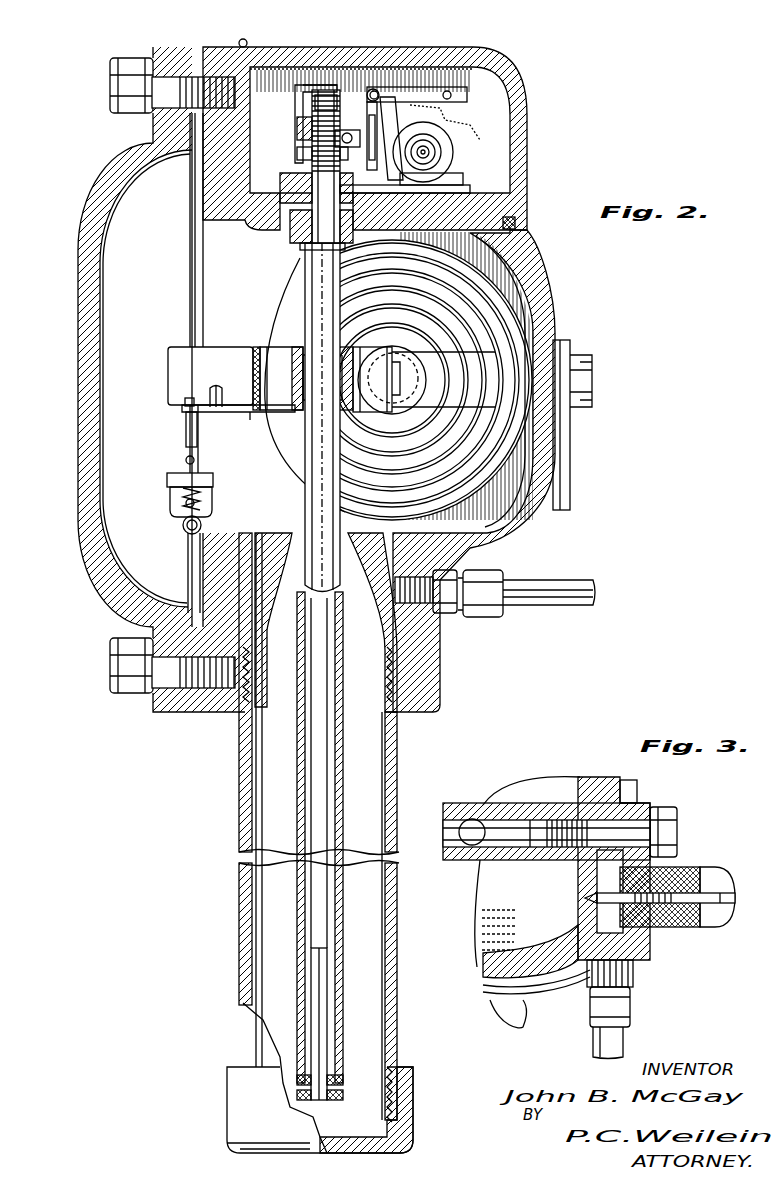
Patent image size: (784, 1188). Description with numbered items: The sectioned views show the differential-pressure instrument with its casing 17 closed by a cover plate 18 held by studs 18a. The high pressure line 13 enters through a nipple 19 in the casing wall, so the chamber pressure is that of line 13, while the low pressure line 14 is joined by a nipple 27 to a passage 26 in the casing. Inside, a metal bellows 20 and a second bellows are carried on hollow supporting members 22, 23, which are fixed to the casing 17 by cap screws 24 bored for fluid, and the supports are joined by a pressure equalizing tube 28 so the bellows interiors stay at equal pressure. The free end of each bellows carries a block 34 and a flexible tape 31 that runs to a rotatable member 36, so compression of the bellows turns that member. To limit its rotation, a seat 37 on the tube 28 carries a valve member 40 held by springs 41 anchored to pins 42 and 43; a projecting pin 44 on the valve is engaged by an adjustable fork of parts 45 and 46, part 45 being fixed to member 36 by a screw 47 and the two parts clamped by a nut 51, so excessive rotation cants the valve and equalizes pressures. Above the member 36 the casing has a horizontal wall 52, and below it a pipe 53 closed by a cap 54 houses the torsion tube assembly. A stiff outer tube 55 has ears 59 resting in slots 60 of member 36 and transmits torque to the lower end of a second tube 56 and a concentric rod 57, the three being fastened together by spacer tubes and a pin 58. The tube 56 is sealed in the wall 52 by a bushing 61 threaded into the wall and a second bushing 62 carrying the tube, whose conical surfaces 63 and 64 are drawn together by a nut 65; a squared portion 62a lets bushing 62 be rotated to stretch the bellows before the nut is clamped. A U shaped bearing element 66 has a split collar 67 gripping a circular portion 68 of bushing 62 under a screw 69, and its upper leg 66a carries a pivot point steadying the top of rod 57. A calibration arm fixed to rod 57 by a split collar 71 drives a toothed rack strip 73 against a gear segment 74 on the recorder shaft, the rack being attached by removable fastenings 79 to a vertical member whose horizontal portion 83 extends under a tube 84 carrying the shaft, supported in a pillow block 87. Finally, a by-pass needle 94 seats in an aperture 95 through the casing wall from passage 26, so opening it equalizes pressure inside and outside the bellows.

In FIG. 2, the line 13 is at (540, 590).
In FIG. 3, the line 14 is at (600, 1045).
In FIG. 2, the casing 17 is at (545, 275).
In FIG. 3, the casing 17 is at (528, 970).
In FIG. 2, the cover plate 18 is at (75, 372).
In FIG. 2, the studs 18a is at (120, 100).
In FIG. 2, the nipple 19 is at (440, 612).
In FIG. 2, the bellows 20 is at (270, 452).
In FIG. 2, the supporting member 22 is at (170, 355).
In FIG. 3, the supporting member 23 is at (490, 805).
In FIG. 2, the cap screws 24 is at (580, 356).
In FIG. 3, the cap screws 24 is at (655, 825).
In FIG. 3, the passageway 26 is at (620, 920).
In FIG. 3, the nipple 27 is at (620, 967).
In FIG. 2, the pressure equalizing tube 28 is at (187, 430).
In FIG. 2, the flexible tape member 31 is at (253, 367).
In FIG. 2, the block 34 is at (400, 385).
In FIG. 2, the rotatable member 36 is at (273, 350).
In FIG. 2, the valve seat 37 is at (212, 505).
In FIG. 2, the valve member 40 is at (213, 480).
In FIG. 2, the springs 41 is at (183, 497).
In FIG. 2, the pin 42 is at (186, 460).
In FIG. 2, the pin 43 is at (186, 505).
In FIG. 2, the projecting pin 44 is at (197, 435).
In FIG. 2, the fork part 45 is at (182, 409).
In FIG. 2, the fork part 46 is at (252, 414).
In FIG. 2, the screw 47 is at (289, 398).
In FIG. 2, the nut 51 is at (210, 390).
In FIG. 2, the horizontal wall 52 is at (468, 212).
In FIG. 2, the pipe 53 is at (398, 1010).
In FIG. 2, the cap 54 is at (413, 1093).
In FIG. 2, the tube 55 is at (342, 905).
In FIG. 2, the second tube 56 is at (322, 728).
In FIG. 2, the rod 57 is at (322, 993).
In FIG. 2, the pin 58 is at (343, 1085).
In FIG. 2, the ears 59 is at (340, 342).
In FIG. 2, the slots 60 is at (318, 357).
In FIG. 2, the bushing 61 is at (283, 185).
In FIG. 2, the bushing 62 is at (305, 165).
In FIG. 2, the squared portion 62a is at (312, 155).
In FIG. 2, the conical surface 63 is at (320, 249).
In FIG. 2, the conical surface 64 is at (292, 232).
In FIG. 2, the nut 65 is at (362, 186).
In FIG. 2, the U shaped element 66 is at (298, 115).
In FIG. 2, the upper leg 66a is at (308, 85).
In FIG. 2, the split collar 67 is at (348, 133).
In FIG. 2, the circular portion 68 is at (300, 128).
In FIG. 2, the screw 69 is at (395, 120).
In FIG. 2, the split collar 71 is at (345, 84).
In FIG. 2, the toothed strip 73 is at (465, 95).
In FIG. 2, the gear segment 74 is at (452, 130).
In FIG. 2, the removable fastenings 79 is at (373, 92).
In FIG. 2, the horizontal portion 83 is at (455, 178).
In FIG. 2, the tube 84 is at (445, 148).
In FIG. 2, the pillow block 87 is at (452, 155).
In FIG. 3, the needle 94 is at (690, 880).
In FIG. 3, the aperture 95 is at (585, 905).